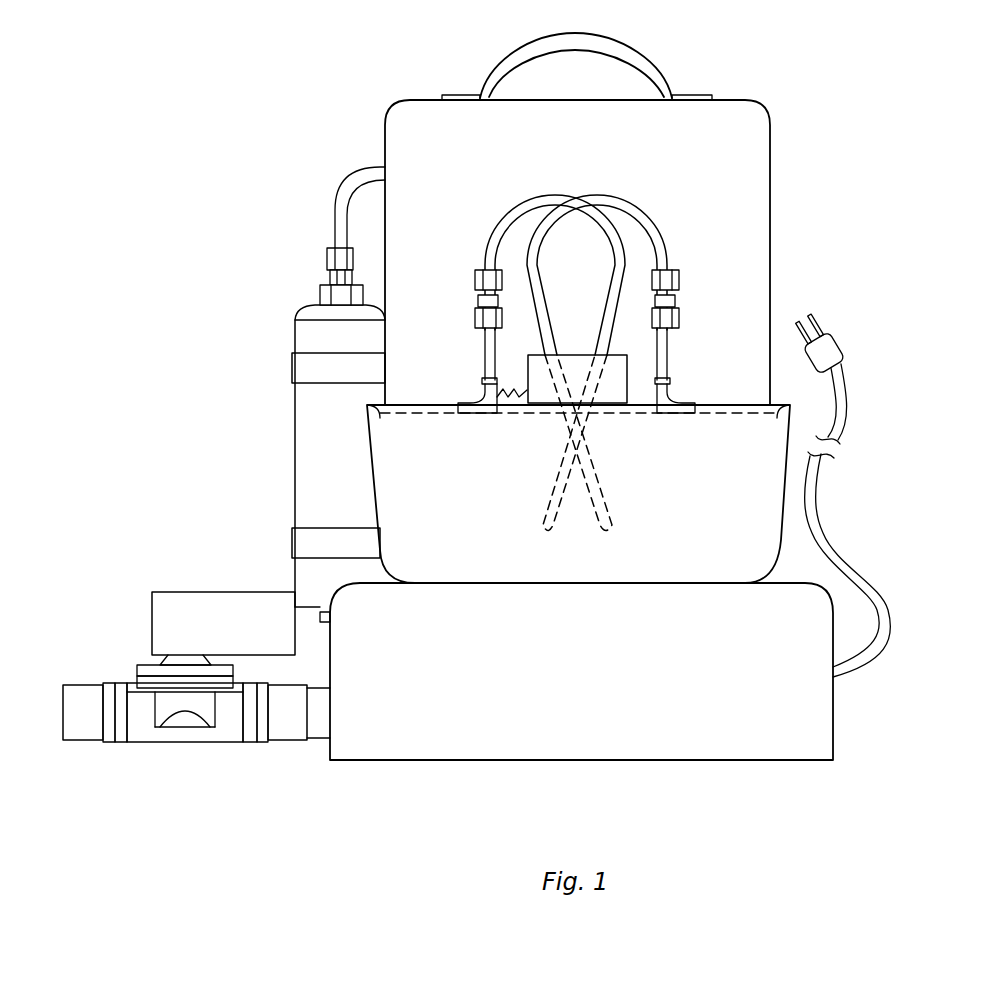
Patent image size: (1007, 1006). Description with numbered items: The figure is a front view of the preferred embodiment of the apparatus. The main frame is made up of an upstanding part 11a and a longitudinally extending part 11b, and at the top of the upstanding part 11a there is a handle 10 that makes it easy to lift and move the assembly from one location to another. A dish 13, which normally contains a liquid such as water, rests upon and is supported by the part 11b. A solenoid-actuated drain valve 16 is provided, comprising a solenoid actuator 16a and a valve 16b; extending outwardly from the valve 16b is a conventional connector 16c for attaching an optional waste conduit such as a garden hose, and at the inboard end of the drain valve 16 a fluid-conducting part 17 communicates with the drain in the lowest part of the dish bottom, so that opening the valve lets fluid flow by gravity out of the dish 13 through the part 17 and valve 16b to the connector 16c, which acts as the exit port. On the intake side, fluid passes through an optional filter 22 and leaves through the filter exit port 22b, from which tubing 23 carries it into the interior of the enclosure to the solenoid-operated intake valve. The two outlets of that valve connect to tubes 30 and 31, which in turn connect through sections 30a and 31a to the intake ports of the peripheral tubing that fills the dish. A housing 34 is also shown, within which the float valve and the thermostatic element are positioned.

The handle 10 is at (658, 64).
The upstanding part of main frame 11a is at (601, 153).
The longitudinally extending part of main frame 11b is at (604, 664).
The dish 13 is at (705, 516).
The solenoid-actuated drain valve 16 is at (102, 642).
The solenoid actuator 16a is at (240, 607).
The valve 16b is at (180, 730).
The connector 16c is at (85, 700).
The fluid-conducting part 17 is at (320, 730).
The filter 22 is at (352, 461).
The filter exit port 22b is at (334, 300).
The tubing 23 is at (335, 207).
The tube 30 is at (485, 250).
The tube 31 is at (667, 250).
The tube section 30a is at (485, 345).
The tube section 31a is at (667, 360).
The housing 34 is at (618, 400).